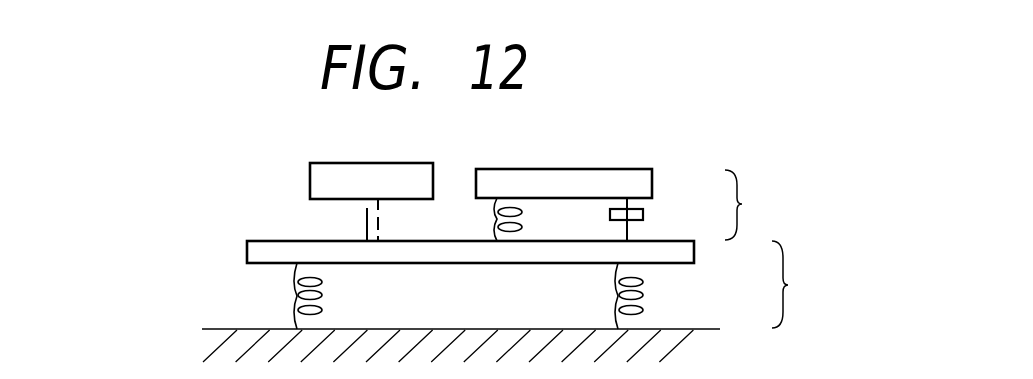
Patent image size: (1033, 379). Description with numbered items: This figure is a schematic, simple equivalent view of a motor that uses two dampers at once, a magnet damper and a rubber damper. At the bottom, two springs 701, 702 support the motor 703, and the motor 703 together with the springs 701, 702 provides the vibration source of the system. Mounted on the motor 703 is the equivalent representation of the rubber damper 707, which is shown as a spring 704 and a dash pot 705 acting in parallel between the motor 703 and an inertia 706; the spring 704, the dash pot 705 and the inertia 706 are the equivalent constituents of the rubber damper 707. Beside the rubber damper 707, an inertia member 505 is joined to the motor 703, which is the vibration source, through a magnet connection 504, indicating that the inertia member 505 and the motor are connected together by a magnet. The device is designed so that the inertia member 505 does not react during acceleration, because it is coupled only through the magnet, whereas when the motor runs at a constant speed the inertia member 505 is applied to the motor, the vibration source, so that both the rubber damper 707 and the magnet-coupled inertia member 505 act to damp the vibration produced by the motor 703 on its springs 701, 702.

The inertia member 505 is at (310, 177).
The magnet connection 504 is at (358, 227).
The inertia 706 is at (601, 169).
The spring 704 is at (497, 222).
The dash pot 705 is at (643, 215).
The rubber damper 707 is at (745, 204).
The spring 701 is at (296, 292).
The spring 702 is at (644, 296).
The motor 703 is at (790, 285).